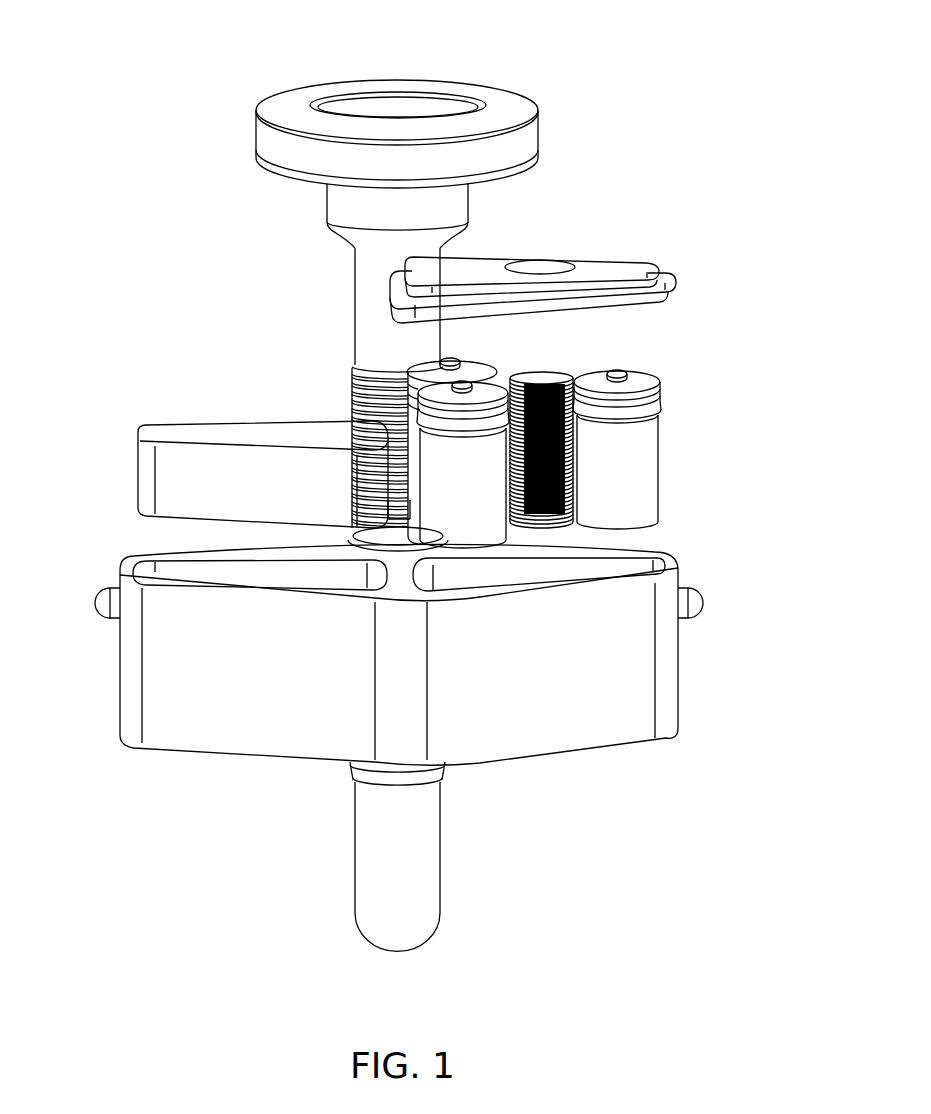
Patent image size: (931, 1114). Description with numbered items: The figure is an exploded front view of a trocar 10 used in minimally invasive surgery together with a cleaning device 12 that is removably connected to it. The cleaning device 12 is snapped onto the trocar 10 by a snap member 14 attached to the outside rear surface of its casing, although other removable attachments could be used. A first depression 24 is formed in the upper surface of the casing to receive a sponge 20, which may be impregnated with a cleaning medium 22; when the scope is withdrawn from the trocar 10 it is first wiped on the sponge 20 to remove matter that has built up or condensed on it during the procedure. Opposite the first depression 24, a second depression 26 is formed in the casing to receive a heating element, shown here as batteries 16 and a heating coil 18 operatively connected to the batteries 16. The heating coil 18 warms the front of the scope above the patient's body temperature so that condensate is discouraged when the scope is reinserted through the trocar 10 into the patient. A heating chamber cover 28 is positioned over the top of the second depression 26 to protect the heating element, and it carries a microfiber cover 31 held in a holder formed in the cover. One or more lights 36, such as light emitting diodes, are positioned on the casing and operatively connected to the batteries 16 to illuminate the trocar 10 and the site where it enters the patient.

The trocar 10 is at (538, 72).
The cleaning device 12 is at (580, 371).
The snap member 14 is at (323, 541).
The batteries 16 is at (504, 375).
The heating coil 18 is at (582, 363).
The sponge 20 is at (235, 421).
The cleaning medium 22 is at (288, 460).
The first depression 24 is at (281, 587).
The second depression 26 is at (478, 584).
The heating chamber cover 28 is at (667, 275).
The microfiber cover 31 is at (622, 265).
The lights 36 is at (92, 603).